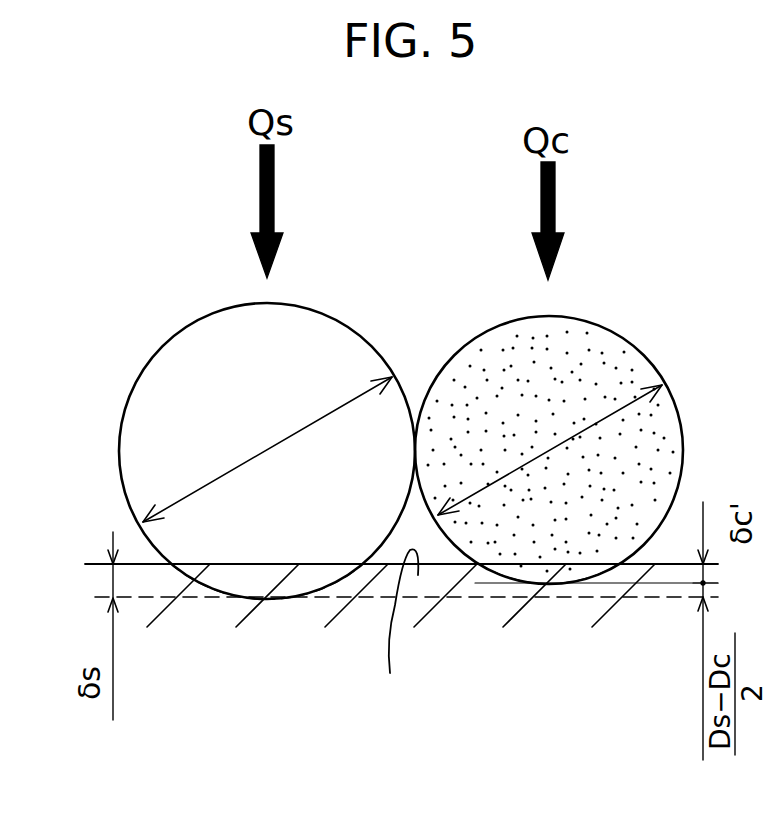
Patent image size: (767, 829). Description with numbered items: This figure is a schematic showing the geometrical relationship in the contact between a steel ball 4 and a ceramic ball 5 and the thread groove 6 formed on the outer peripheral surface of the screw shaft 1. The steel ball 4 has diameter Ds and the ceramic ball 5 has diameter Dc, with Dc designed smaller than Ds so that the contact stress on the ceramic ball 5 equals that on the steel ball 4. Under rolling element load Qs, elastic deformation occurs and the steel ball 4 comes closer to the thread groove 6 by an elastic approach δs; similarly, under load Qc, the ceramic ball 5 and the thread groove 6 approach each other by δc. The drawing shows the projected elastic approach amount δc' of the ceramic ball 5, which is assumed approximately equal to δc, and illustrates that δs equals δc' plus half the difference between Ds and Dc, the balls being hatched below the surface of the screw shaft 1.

The screw shaft 1 is at (270, 618).
The steel ball 4 is at (180, 358).
The ceramic ball 5 is at (663, 415).
The thread groove 6 is at (400, 631).